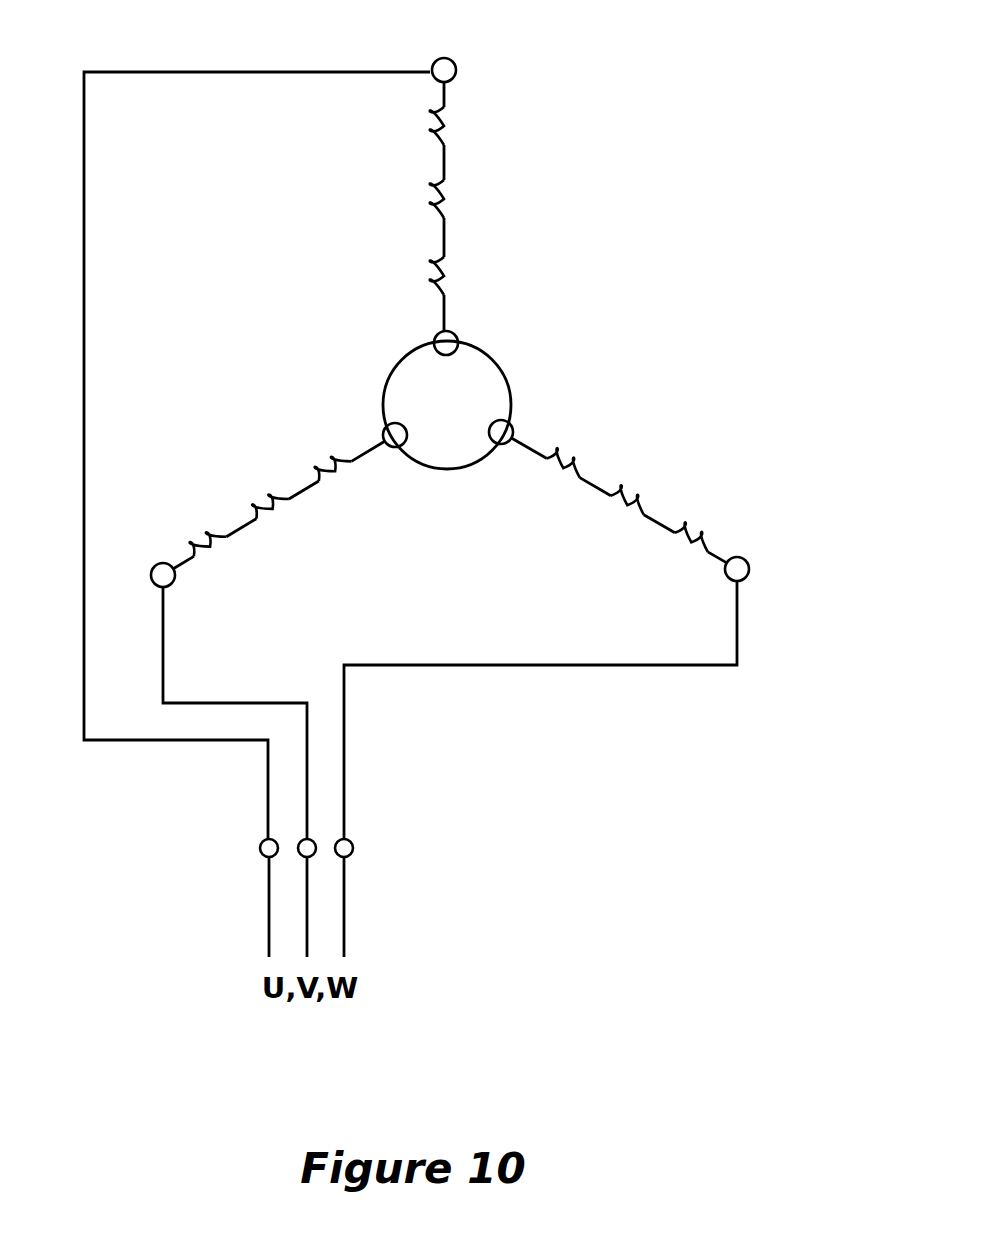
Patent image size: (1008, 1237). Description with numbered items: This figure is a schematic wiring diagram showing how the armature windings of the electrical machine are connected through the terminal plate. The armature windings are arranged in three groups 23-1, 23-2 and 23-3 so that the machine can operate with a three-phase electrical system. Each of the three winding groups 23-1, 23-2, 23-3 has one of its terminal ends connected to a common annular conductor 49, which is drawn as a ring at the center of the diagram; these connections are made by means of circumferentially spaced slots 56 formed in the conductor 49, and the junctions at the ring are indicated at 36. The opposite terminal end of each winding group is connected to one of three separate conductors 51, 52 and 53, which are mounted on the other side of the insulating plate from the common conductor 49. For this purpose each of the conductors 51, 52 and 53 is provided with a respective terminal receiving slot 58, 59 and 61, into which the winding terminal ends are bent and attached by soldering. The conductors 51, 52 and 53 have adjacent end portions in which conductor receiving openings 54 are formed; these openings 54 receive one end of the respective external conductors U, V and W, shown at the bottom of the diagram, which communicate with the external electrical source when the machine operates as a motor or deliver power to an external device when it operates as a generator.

The first group of armature windings 23-1 is at (275, 499).
The second group of armature windings 23-2 is at (497, 206).
The third group of armature windings 23-3 is at (622, 494).
The connection terminals 36 is at (395, 447).
The common annular conductor 49 is at (512, 382).
The conductor 51 is at (593, 667).
The conductor 52 is at (127, 740).
The conductor 53 is at (263, 703).
The conductor receiving openings 54 is at (276, 842).
The circumferentially spaced slots 56 is at (458, 337).
The terminal receiving slot 58 is at (749, 566).
The terminal receiving slot 59 is at (455, 66).
The terminal receiving slot 61 is at (160, 563).